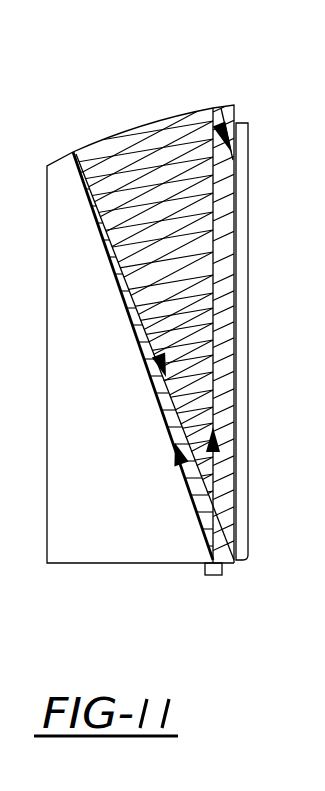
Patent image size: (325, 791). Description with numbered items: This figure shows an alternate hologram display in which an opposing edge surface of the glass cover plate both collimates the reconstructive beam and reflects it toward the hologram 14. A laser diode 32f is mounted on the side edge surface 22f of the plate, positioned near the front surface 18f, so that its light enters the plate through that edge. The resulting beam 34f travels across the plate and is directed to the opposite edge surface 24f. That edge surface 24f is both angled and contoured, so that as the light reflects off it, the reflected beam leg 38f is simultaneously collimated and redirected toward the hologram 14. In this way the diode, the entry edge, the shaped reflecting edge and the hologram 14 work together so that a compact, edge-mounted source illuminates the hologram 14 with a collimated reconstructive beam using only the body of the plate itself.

The hologram 14 is at (240, 192).
The front surface 18f is at (234, 562).
The side edge surface 22f is at (140, 563).
The edge surface 24f is at (62, 156).
The laser diode 32f is at (222, 573).
The beam 34f is at (184, 478).
The beam leg 38f is at (222, 106).